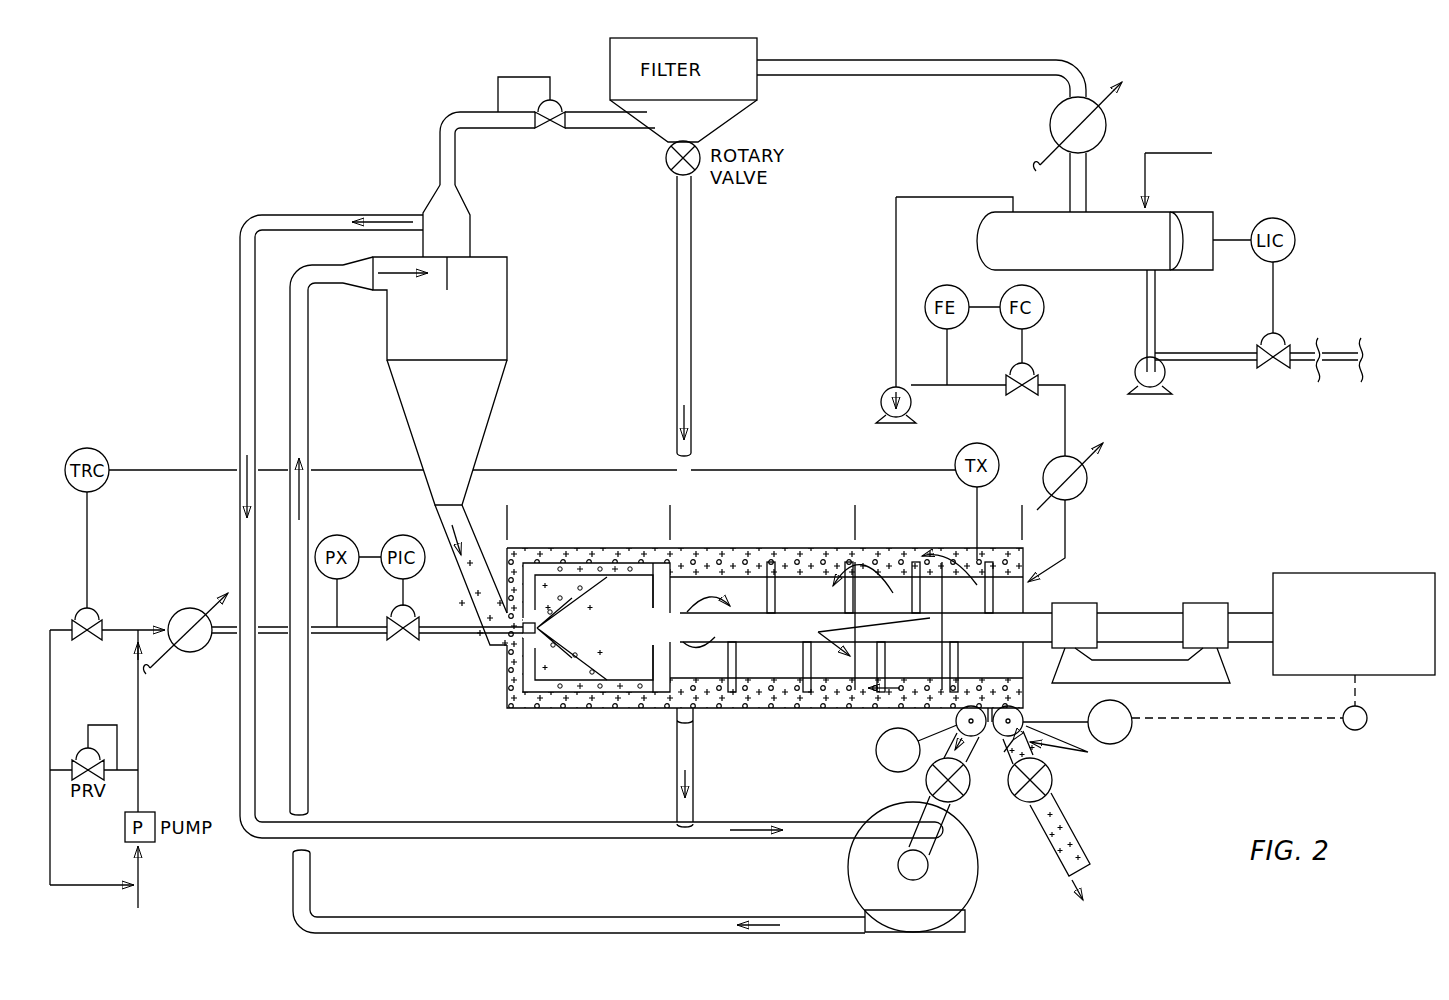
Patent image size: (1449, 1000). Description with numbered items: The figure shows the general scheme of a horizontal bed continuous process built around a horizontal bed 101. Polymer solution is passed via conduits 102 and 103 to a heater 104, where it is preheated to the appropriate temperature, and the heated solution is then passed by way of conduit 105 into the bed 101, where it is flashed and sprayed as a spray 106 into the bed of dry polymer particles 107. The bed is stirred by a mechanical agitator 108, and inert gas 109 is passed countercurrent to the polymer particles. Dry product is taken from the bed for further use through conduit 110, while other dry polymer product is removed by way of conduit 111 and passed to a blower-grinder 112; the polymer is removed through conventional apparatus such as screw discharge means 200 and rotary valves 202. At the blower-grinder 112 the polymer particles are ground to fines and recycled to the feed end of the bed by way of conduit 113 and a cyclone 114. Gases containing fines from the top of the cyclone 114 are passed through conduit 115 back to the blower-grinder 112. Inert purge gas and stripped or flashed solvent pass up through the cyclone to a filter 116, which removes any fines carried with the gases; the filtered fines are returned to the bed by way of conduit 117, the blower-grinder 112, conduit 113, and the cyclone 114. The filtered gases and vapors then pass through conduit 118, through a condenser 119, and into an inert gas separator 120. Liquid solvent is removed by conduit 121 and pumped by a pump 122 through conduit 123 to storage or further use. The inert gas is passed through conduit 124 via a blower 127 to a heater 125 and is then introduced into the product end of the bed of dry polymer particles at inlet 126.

The horizontal bed 101 is at (783, 710).
The conduit 102 is at (140, 896).
The conduit 103 is at (139, 628).
The heater 104 is at (190, 606).
The conduit 105 is at (345, 634).
The spray 106 is at (578, 650).
The bed of dry polymer particles 107 is at (630, 577).
The mechanical agitator 108 is at (1010, 637).
The inert gas 109 is at (775, 600).
The conduit 110 is at (1072, 832).
The conduit 111 is at (975, 757).
The blower-grinder 112 is at (978, 868).
The conduit 113 is at (310, 392).
The cyclone 114 is at (510, 311).
The conduit 115 is at (237, 391).
The filter 116 is at (606, 52).
The conduit 117 is at (675, 367).
The conduit 118 is at (822, 78).
The condenser 119 is at (1110, 124).
The inert gas separator 120 is at (977, 239).
The conduit 121 is at (1146, 316).
The pump 122 is at (1165, 378).
The conduit 123 is at (1259, 342).
The conduit 124 is at (896, 291).
The heater 125 is at (1050, 462).
The inert gas inlet 126 is at (1068, 523).
The blower 127 is at (912, 402).
The screw discharge means 200 is at (957, 724).
The rotary valves 202 is at (962, 800).